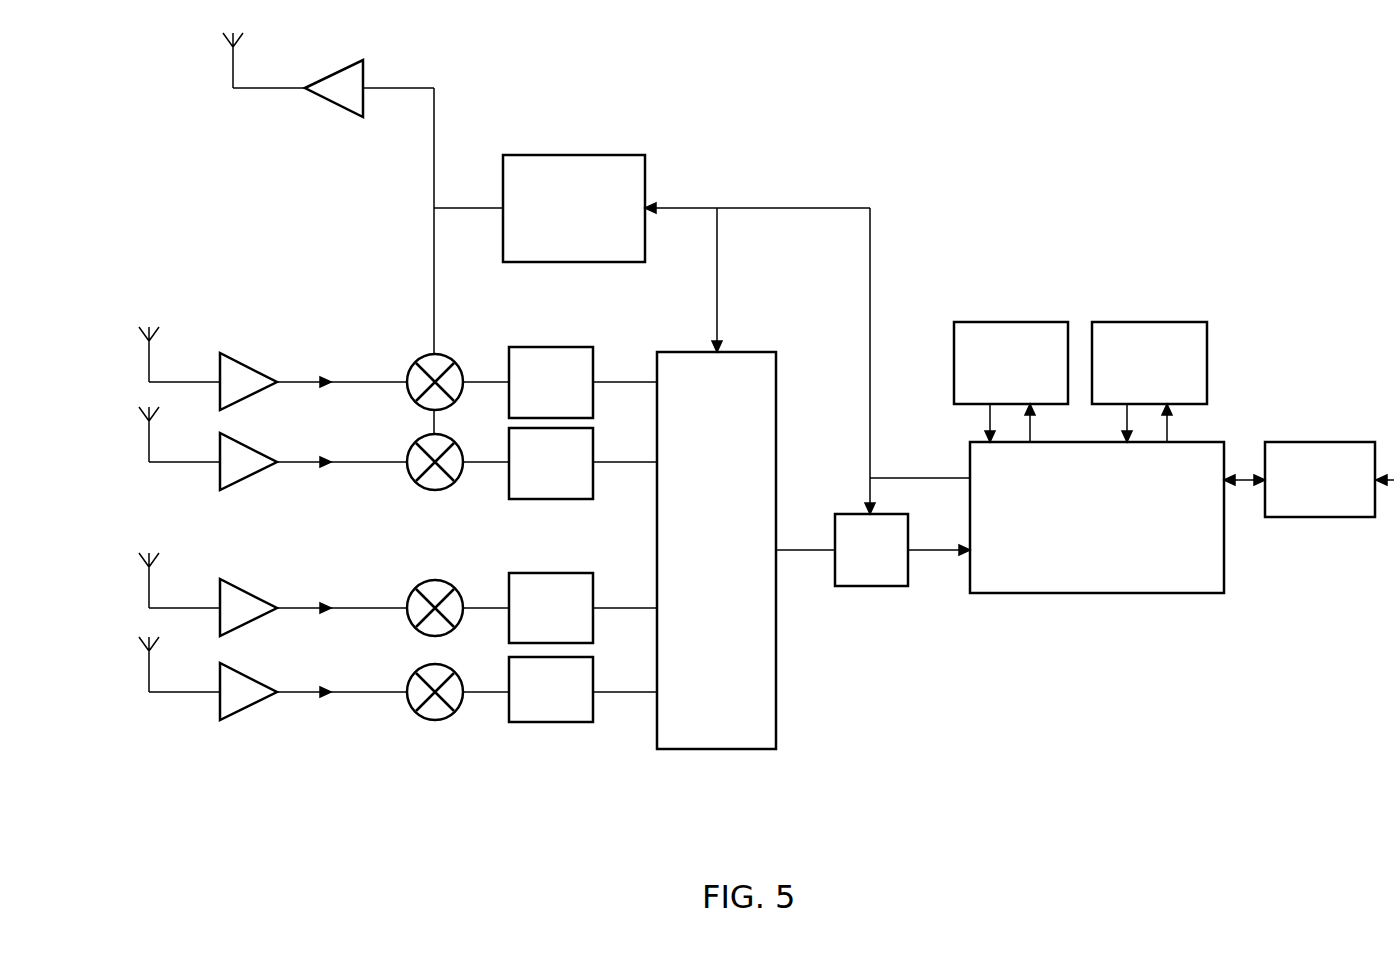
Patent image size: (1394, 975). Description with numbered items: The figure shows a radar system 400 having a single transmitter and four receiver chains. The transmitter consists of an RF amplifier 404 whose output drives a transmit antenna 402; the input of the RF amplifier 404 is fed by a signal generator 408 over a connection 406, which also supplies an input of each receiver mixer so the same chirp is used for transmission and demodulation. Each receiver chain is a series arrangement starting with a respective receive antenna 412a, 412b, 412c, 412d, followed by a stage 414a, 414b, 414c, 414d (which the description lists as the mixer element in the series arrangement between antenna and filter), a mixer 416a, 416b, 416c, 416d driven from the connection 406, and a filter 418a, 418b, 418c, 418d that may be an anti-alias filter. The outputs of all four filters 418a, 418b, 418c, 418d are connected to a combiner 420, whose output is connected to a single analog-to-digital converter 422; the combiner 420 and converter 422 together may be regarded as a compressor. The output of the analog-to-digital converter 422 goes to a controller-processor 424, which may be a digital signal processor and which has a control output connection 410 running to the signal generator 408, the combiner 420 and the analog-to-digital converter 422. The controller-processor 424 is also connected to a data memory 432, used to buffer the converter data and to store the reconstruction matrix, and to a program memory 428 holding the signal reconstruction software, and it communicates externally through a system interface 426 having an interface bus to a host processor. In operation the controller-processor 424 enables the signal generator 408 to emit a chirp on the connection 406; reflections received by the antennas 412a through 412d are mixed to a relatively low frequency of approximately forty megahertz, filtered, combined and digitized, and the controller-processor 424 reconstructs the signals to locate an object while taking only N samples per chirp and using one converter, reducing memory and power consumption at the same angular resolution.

The radar system 400 is at (776, 854).
The transmit antenna 402 is at (232, 73).
The RF amplifier 404 is at (333, 74).
The connection 406 is at (434, 253).
The signal generator 408 is at (574, 154).
The control output connection 410 is at (820, 208).
The antenna 412a is at (148, 355).
The antenna 412b is at (148, 435).
The antenna 412c is at (148, 585).
The antenna 412d is at (148, 669).
The mixer 414a is at (275, 340).
The mixer 414b is at (258, 472).
The mixer 414c is at (275, 565).
The mixer 414d is at (258, 701).
The mixer 416a is at (415, 361).
The mixer 416b is at (409, 452).
The mixer 416c is at (416, 588).
The mixer 416d is at (440, 718).
The filter 418a is at (600, 326).
The filter 418b is at (524, 500).
The filter 418c is at (600, 550).
The filter 418d is at (558, 722).
The combiner 420 is at (720, 749).
The analog-to-digital converter 422 is at (871, 586).
The controller-processor 424 is at (1100, 593).
The system interface 426 is at (1325, 517).
The program memory 428 is at (1148, 322).
The data memory 432 is at (1010, 322).